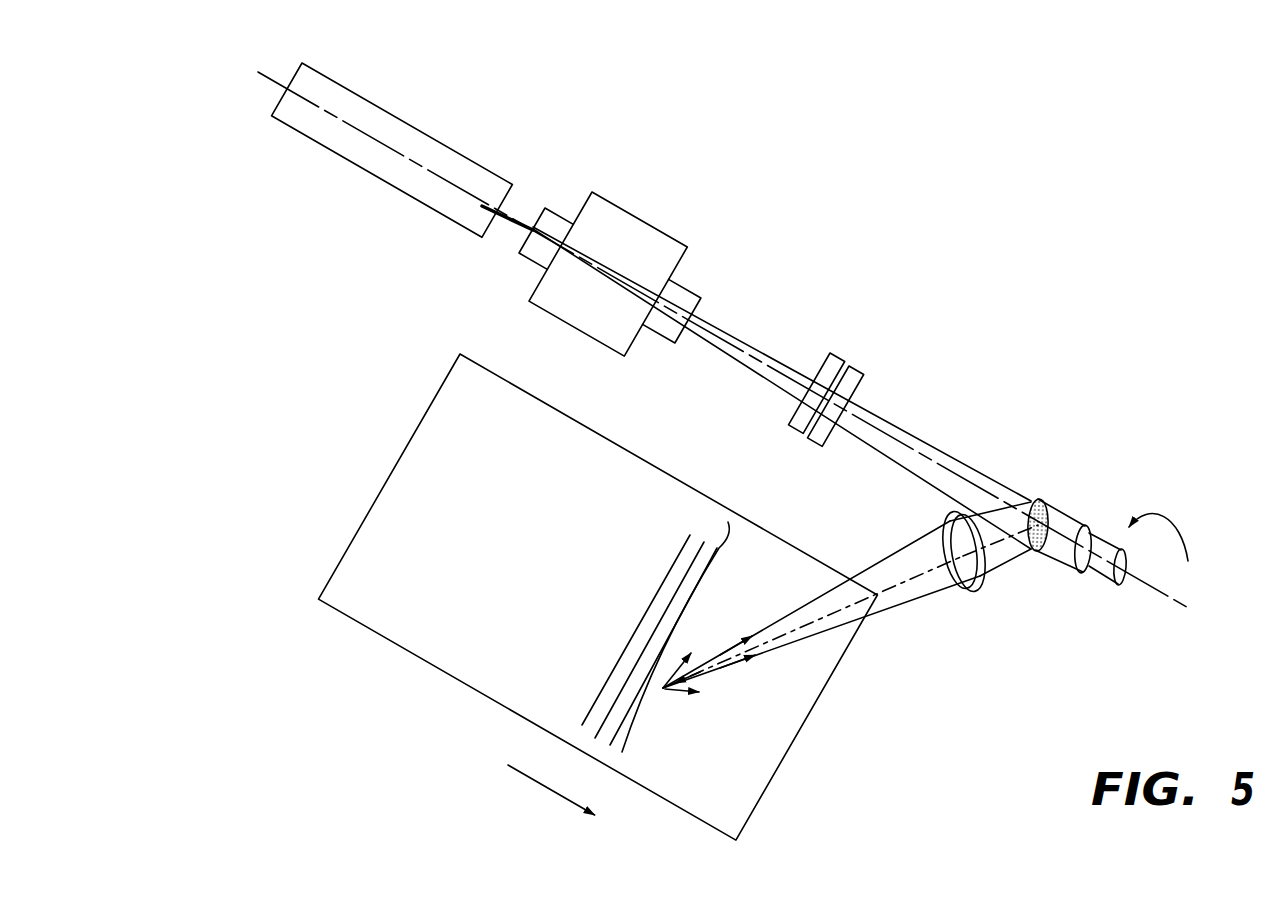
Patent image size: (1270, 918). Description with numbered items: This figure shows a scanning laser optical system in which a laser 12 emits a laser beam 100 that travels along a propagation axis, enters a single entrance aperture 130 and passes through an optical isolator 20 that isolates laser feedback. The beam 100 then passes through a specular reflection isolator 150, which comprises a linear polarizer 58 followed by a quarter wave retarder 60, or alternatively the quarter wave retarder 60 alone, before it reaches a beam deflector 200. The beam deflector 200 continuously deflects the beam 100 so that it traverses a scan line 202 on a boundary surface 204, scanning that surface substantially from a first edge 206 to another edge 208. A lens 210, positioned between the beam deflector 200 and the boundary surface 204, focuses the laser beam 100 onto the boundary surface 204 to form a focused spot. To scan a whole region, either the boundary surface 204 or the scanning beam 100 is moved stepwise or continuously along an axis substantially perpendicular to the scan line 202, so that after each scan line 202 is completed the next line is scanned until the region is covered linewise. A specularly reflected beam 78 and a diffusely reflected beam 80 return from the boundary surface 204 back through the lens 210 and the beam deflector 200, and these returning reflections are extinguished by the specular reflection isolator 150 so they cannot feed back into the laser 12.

The laser 12 is at (401, 133).
The entrance aperture 130 is at (534, 219).
The optical isolator 20 is at (652, 200).
The laser beam 100 is at (727, 337).
The specular reflection isolator 150 is at (899, 321).
The linear polarizer 58 is at (834, 367).
The quarter wave retarder 60 is at (857, 372).
The beam deflector 200 is at (1063, 520).
The lens 210 is at (973, 583).
The specularly reflected beam 78 is at (724, 655).
The diffusely reflected beam 80 is at (673, 694).
The boundary surface 204 is at (767, 750).
The scan line 202 is at (648, 607).
The another edge 208 is at (728, 522).
The first edge 206 is at (623, 752).